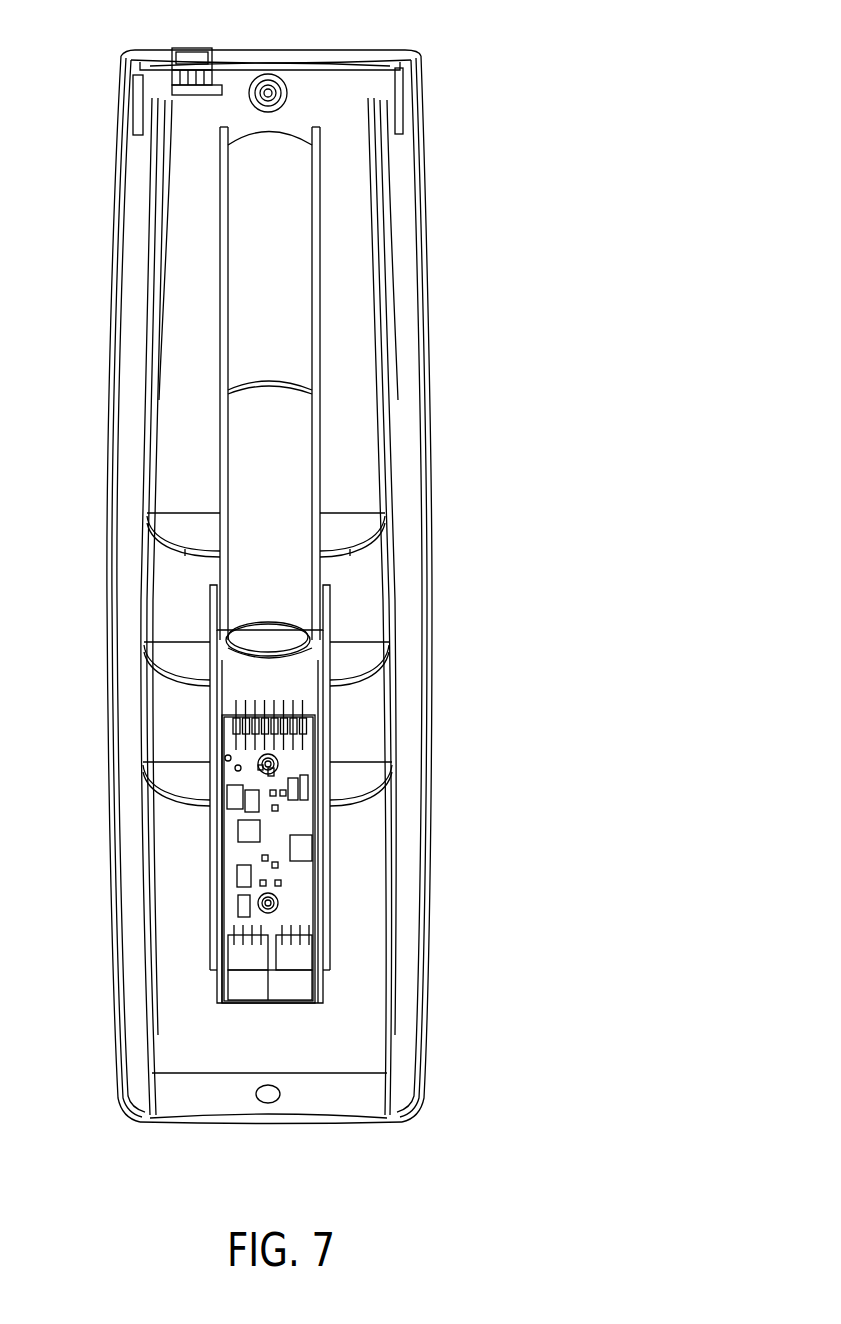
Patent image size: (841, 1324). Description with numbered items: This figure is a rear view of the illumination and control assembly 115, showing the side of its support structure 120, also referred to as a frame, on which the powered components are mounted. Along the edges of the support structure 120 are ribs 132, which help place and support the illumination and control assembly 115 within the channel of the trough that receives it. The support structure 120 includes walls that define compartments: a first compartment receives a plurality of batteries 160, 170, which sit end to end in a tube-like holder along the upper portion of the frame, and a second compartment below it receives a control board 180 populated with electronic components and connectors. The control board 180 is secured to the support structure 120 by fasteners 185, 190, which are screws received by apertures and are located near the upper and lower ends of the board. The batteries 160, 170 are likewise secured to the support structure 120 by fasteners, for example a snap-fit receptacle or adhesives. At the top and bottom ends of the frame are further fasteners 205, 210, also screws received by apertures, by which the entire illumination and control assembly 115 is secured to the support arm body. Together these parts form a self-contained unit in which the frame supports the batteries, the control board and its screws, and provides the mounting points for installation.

The illumination and control assembly 115 is at (424, 149).
The support structure 120 is at (355, 128).
The ribs 132 is at (176, 525).
The battery 160 is at (285, 306).
The battery 170 is at (276, 488).
The control board 180 is at (295, 957).
The fastener 185 is at (280, 903).
The fastener 190 is at (280, 762).
The fastener 205 is at (272, 84).
The fastener 210 is at (270, 1097).